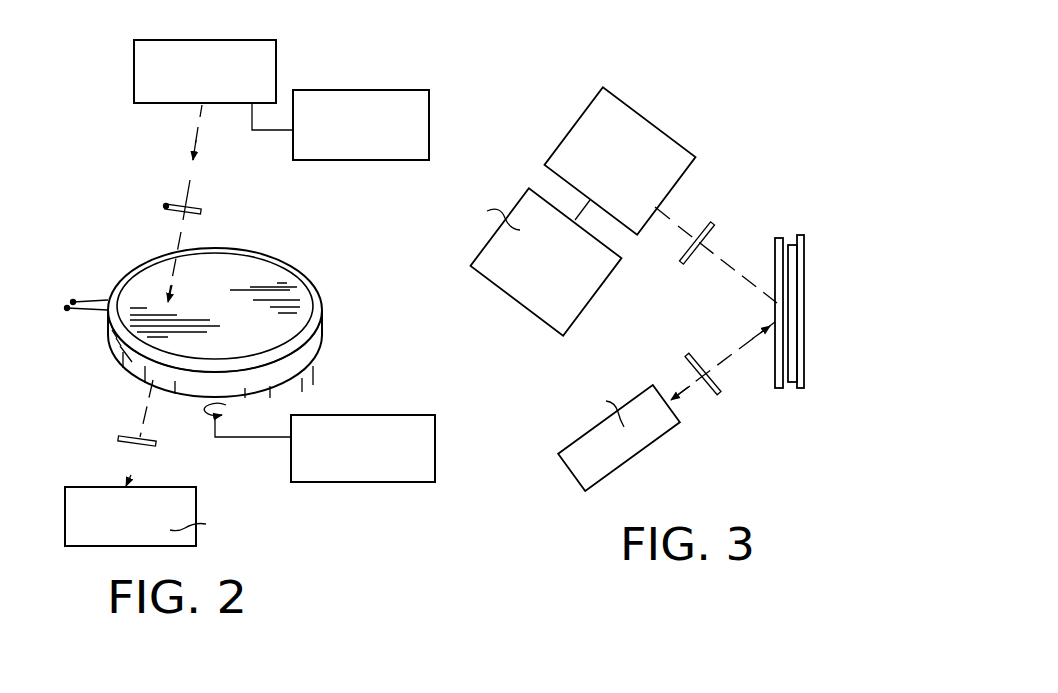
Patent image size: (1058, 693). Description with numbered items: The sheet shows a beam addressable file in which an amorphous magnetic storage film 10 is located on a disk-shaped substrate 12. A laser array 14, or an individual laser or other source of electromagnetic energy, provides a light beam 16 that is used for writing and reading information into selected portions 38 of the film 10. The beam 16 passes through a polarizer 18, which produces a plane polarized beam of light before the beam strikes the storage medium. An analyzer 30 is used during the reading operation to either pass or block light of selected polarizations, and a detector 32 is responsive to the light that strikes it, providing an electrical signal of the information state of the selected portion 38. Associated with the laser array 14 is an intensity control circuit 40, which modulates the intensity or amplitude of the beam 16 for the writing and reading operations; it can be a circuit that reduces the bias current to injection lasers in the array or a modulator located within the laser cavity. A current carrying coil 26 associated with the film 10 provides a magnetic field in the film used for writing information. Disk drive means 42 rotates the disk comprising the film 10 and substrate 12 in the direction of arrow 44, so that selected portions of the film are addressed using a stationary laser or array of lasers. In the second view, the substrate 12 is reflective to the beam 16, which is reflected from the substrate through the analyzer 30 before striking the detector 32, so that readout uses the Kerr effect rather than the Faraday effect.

In FIG. 2, the storage film 10 is at (300, 284).
In FIG. 3, the storage film 10 is at (777, 353).
In FIG. 2, the disk-shaped substrate 12 is at (322, 348).
In FIG. 3, the disk-shaped substrate 12 is at (800, 388).
In FIG. 2, the laser array 14 is at (222, 40).
In FIG. 3, the laser array 14 is at (677, 146).
In FIG. 2, the light beam 16 is at (199, 145).
In FIG. 3, the light beam 16 is at (660, 213).
In FIG. 2, the polarizer 18 is at (203, 213).
In FIG. 3, the polarizer 18 is at (712, 226).
In FIG. 2, the current carrying coil 26 is at (93, 305).
In FIG. 3, the current carrying coil 26 is at (793, 343).
In FIG. 2, the analyzer 30 is at (120, 438).
In FIG. 3, the analyzer 30 is at (716, 398).
In FIG. 2, the detector 32 is at (78, 496).
In FIG. 3, the detector 32 is at (636, 452).
In FIG. 2, the selected portions 38 is at (174, 300).
In FIG. 2, the intensity control circuit 40 is at (358, 90).
In FIG. 3, the intensity control circuit 40 is at (573, 292).
In FIG. 2, the disk drive means 42 is at (435, 425).
In FIG. 2, the arrow 44 is at (341, 288).